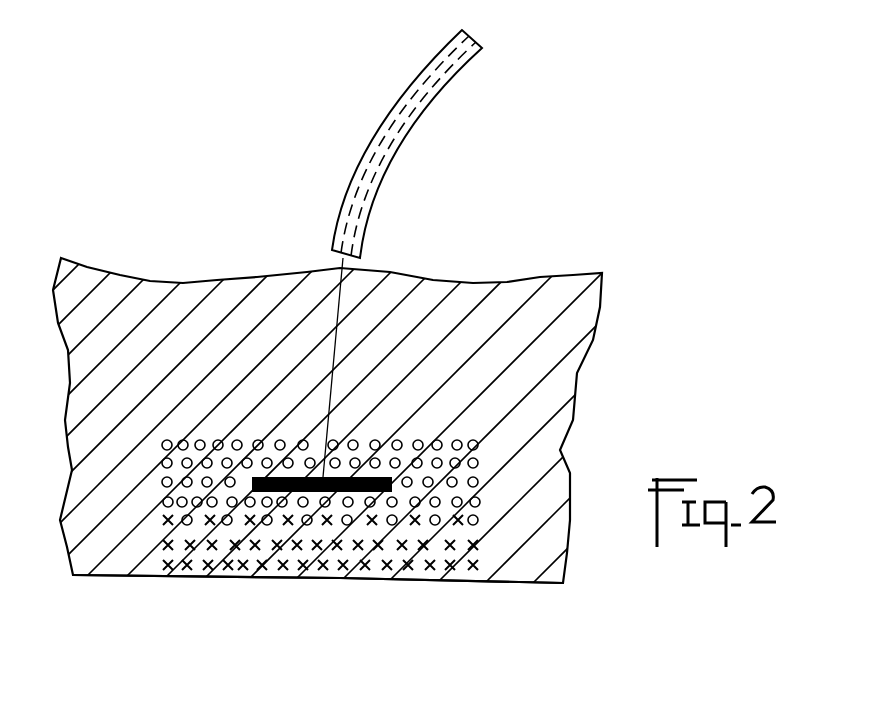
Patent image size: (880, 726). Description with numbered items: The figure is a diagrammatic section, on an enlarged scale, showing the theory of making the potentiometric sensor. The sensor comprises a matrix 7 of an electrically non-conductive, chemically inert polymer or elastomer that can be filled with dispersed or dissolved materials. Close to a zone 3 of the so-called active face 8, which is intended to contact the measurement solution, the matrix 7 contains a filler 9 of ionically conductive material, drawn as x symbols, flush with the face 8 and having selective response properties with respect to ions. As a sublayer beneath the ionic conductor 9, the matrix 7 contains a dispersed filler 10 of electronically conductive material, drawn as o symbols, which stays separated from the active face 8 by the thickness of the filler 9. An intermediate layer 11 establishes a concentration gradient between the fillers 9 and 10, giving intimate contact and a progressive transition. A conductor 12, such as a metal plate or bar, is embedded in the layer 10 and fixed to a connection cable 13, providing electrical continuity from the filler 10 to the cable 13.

The sensor structure 3 is at (438, 337).
The matrix 7 is at (585, 303).
The active face 8 is at (505, 583).
The filler of ionically conductive material 9 is at (420, 575).
The filler of electronically conductive material 10 is at (460, 445).
The intermediate layer 11 is at (463, 520).
The conductor 12 is at (383, 477).
The connection cable 13 is at (400, 105).